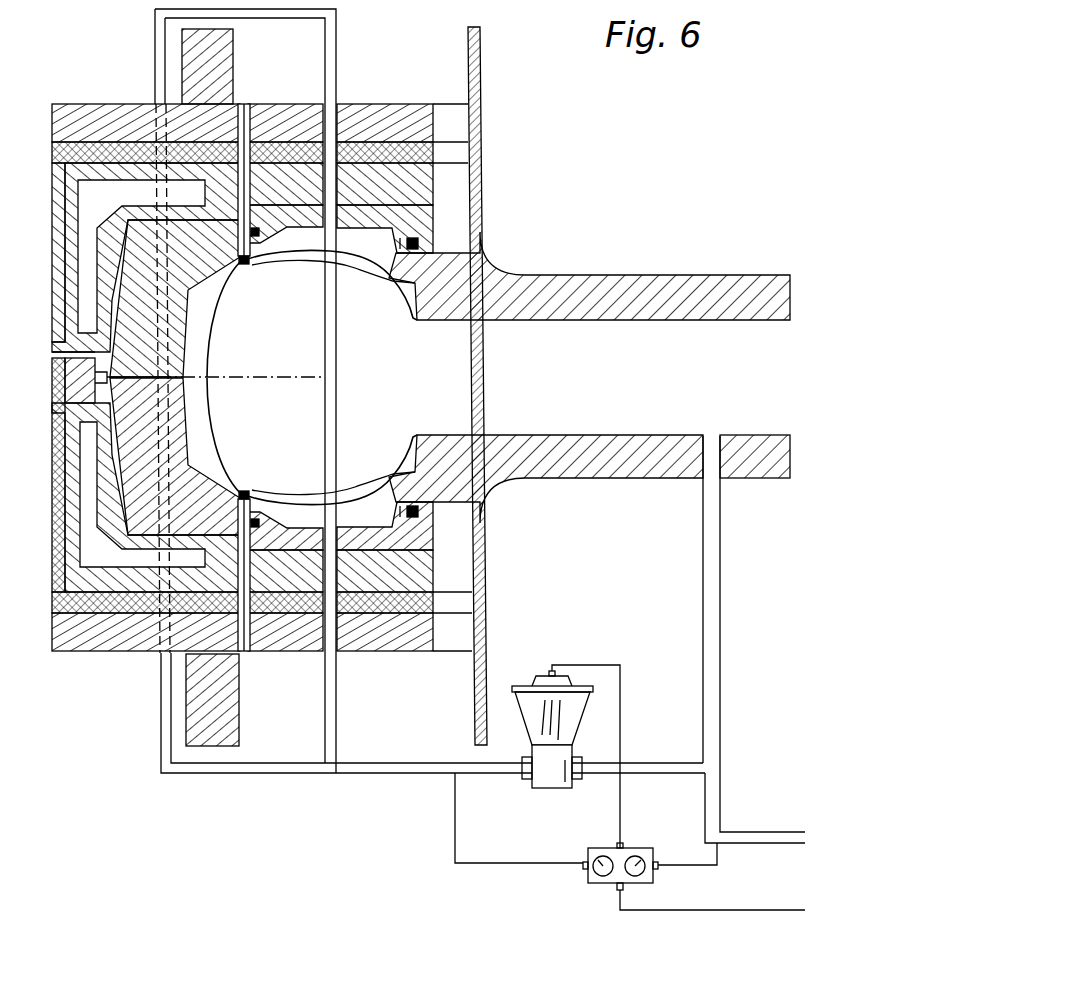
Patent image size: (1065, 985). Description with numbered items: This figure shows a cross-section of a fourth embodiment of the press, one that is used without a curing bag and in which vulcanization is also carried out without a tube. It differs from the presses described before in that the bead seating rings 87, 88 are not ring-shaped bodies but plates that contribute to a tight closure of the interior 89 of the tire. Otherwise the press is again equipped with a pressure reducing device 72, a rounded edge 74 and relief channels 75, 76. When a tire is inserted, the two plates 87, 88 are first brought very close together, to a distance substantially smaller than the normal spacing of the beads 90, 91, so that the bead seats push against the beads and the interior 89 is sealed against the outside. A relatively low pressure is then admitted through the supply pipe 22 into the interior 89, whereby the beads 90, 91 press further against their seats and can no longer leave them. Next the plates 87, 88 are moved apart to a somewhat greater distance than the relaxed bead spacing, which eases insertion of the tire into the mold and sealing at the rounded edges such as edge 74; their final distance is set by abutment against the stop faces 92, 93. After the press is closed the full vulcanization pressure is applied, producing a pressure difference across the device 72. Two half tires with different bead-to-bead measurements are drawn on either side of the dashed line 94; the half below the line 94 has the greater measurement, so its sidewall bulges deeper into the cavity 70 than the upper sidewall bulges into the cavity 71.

The cavity 70 is at (368, 520).
The cavity 71 is at (363, 243).
The pressure reducing device 72 is at (513, 865).
The rounded edge 74 is at (250, 265).
The relief channel 75 is at (243, 264).
The relief channel 76 is at (243, 491).
The bead seating ring 87 is at (624, 300).
The bead seating ring 88 is at (608, 462).
The interior of the tire 89 is at (355, 372).
The bead 90 is at (410, 452).
The bead 91 is at (413, 312).
The stop face 92 is at (420, 248).
The stop face 93 is at (437, 507).
The dashed line 94 is at (285, 375).
The supply pipe 22 is at (731, 639).